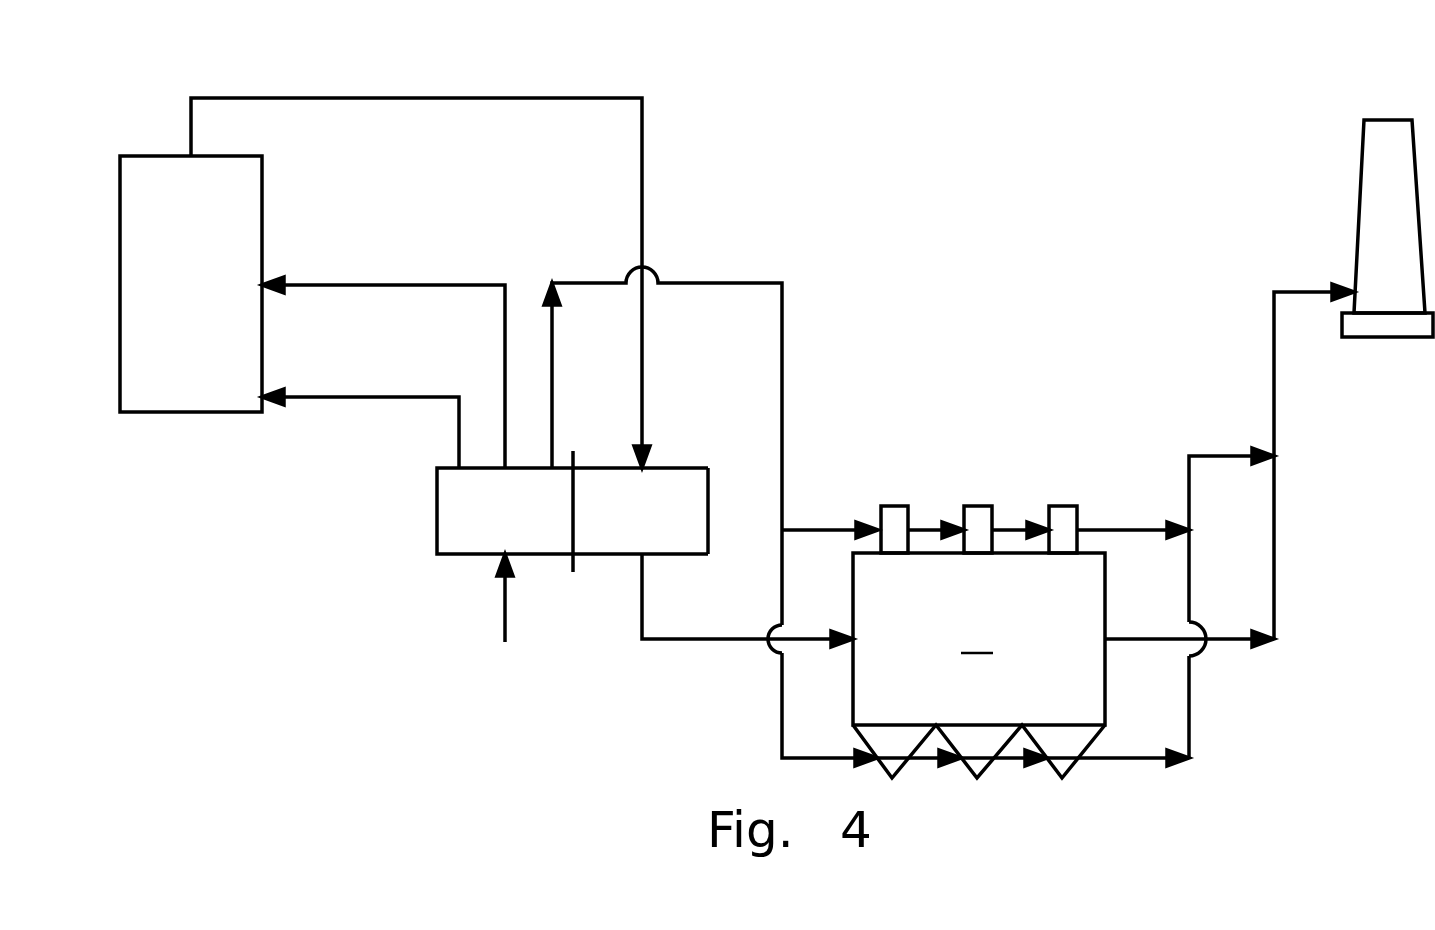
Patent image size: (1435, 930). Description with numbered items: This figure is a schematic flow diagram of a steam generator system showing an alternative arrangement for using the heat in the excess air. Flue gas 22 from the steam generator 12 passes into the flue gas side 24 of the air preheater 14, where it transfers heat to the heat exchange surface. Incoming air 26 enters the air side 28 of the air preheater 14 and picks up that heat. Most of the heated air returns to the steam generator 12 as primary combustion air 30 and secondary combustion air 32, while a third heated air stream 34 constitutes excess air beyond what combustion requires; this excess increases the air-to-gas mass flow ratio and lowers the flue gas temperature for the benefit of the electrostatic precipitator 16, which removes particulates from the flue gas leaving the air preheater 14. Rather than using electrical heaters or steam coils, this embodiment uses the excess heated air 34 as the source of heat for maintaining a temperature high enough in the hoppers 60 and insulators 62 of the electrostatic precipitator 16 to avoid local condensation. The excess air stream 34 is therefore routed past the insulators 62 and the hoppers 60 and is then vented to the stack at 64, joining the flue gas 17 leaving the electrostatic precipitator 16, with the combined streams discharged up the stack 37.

The steam generator 12 is at (158, 412).
The air preheater 14 is at (657, 537).
The electrostatic precipitator 16 is at (958, 639).
The flue gas 17 is at (1274, 557).
The flue gas 22 is at (385, 98).
The flue gas side 24 is at (657, 490).
The incoming air 26 is at (505, 608).
The air side 28 is at (450, 487).
The primary combustion air 30 is at (330, 397).
The secondary combustion air 32 is at (390, 285).
The excess heated air stream 34 is at (782, 363).
The stack 37 is at (1372, 250).
The hoppers 60 is at (975, 755).
The insulators 62 is at (977, 508).
The vent to stack 64 is at (1238, 455).